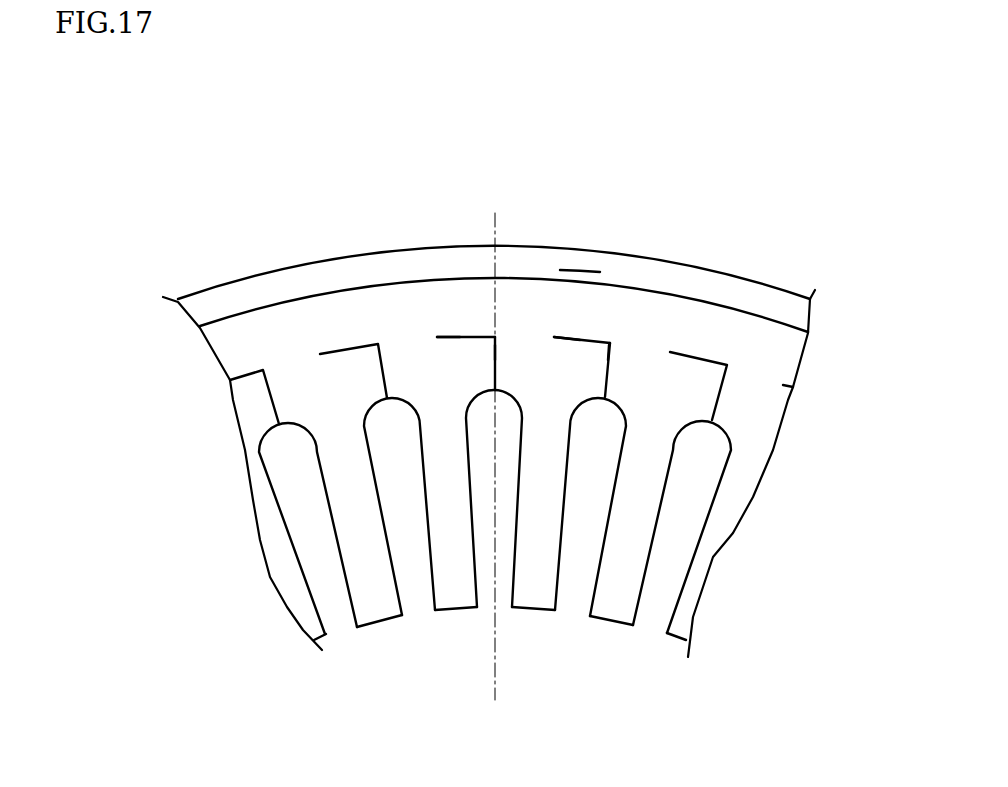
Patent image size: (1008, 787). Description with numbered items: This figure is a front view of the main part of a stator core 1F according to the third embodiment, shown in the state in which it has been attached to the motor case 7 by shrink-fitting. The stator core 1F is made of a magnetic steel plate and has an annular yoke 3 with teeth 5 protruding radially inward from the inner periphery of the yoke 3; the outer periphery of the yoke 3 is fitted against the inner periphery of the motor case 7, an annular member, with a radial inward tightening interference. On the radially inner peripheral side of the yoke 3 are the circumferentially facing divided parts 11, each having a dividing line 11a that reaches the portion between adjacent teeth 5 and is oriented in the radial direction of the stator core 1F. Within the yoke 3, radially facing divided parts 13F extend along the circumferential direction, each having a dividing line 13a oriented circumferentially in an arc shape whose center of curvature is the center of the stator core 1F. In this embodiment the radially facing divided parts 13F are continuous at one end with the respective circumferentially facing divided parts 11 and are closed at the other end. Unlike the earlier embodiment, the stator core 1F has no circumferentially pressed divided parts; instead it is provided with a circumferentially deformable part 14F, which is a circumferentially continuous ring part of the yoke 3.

The stator core 1F is at (548, 277).
The yoke 3 is at (767, 342).
The teeth 5 is at (458, 607).
The motor case 7 is at (578, 263).
The circumferentially facing divided parts 11 is at (492, 367).
The dividing line 11a is at (504, 358).
The dividing line 13a is at (457, 334).
The radially facing divided parts 13F is at (476, 323).
The circumferentially deformable part 14F is at (705, 317).